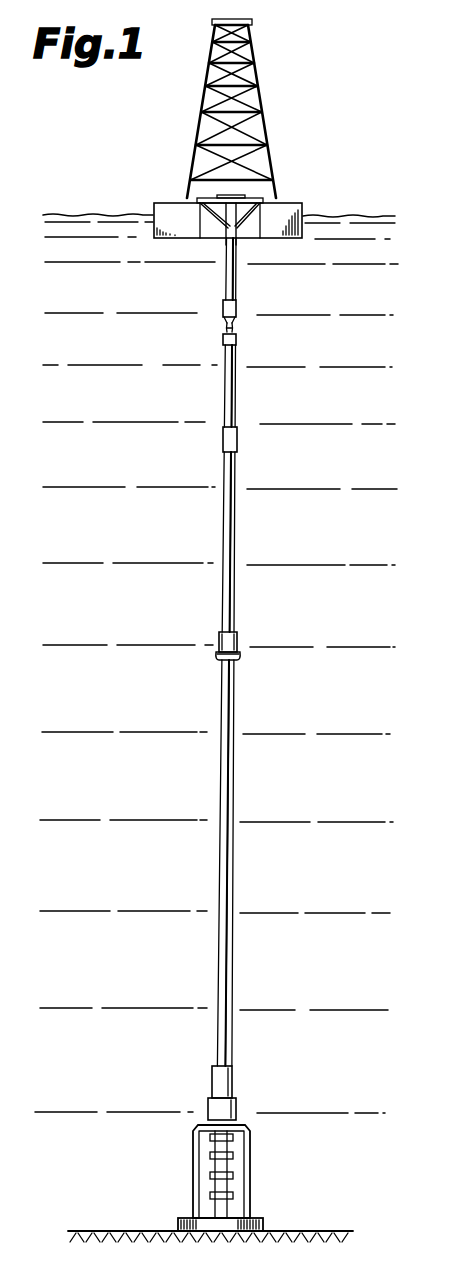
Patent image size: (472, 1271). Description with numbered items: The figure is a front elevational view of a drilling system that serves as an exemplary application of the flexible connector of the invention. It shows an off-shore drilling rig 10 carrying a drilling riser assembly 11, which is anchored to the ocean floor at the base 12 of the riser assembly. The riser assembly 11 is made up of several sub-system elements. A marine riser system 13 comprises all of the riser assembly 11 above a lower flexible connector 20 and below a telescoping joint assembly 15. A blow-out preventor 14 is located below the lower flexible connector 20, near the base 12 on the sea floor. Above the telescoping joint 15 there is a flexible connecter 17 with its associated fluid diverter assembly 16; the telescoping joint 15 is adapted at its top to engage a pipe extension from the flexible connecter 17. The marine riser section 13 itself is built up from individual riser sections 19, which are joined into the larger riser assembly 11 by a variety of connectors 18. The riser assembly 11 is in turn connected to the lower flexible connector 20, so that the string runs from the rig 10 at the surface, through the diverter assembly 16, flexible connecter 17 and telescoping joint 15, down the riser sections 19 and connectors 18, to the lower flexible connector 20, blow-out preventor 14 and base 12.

The off-shore drilling rig 10 is at (274, 141).
The drilling riser assembly 11 is at (241, 639).
The base 12 is at (263, 1219).
The marine riser system 13 is at (223, 595).
The blow-out preventor 14 is at (251, 1152).
The telescoping joint assembly 15 is at (240, 443).
The fluid diverter assembly 16 is at (238, 308).
The flexible connecter 17 is at (238, 343).
The connectors 18 is at (242, 653).
The riser sections 19 is at (226, 323).
The lower flexible connector 20 is at (233, 1078).